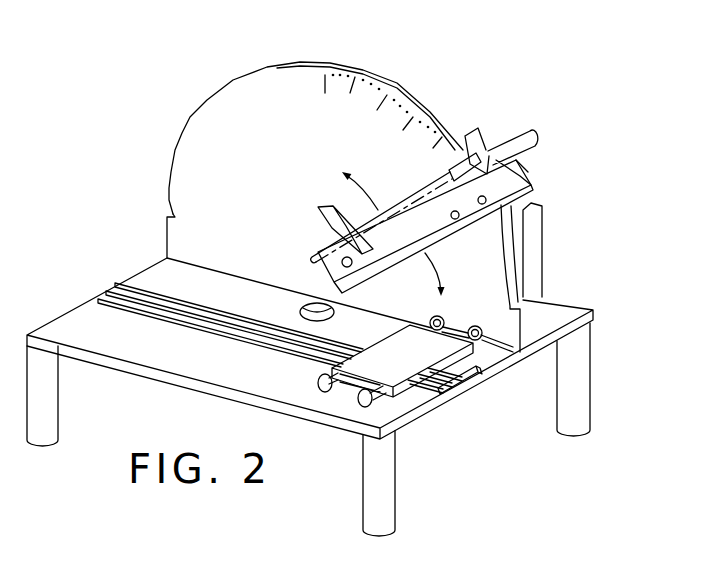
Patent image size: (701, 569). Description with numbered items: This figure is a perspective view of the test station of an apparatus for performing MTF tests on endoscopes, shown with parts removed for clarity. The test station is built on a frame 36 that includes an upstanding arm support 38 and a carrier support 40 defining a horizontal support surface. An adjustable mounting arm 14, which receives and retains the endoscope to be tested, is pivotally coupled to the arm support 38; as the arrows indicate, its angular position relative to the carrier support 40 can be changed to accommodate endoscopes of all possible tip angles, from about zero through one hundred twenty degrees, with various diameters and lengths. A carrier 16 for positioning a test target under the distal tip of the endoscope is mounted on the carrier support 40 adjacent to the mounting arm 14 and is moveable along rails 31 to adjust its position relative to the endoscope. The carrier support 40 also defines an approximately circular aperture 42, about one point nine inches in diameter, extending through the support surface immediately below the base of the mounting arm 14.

The mounting arm 14 is at (530, 182).
The carrier 16 is at (370, 373).
The rails 31 is at (108, 290).
The frame 36 is at (206, 84).
The arm support 38 is at (250, 210).
The carrier support 40 is at (84, 326).
The aperture 42 is at (306, 307).